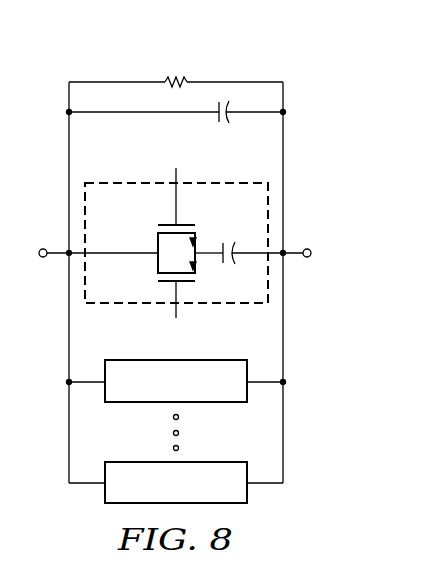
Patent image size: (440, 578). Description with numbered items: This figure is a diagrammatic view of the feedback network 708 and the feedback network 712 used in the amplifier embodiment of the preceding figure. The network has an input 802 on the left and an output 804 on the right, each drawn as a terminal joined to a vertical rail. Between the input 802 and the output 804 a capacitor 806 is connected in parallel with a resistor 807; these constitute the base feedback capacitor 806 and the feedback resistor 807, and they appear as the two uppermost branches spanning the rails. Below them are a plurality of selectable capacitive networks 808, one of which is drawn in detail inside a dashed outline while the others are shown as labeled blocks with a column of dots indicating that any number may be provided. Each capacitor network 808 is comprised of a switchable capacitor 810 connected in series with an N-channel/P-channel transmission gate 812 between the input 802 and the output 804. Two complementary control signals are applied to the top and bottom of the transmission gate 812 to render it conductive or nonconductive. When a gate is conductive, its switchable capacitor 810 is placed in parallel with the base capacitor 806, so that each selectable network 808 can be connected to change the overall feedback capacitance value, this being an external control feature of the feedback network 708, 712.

The feedback network 708 is at (268, 56).
The feedback network 712 is at (306, 87).
The input 802 is at (42, 262).
The output 804 is at (309, 262).
The capacitor 806 is at (223, 127).
The resistor 807 is at (178, 75).
The selectable capacitive network 808 is at (130, 182).
The switchable capacitor 810 is at (230, 240).
The N-channel/P-channel transmission gate 812 is at (157, 262).